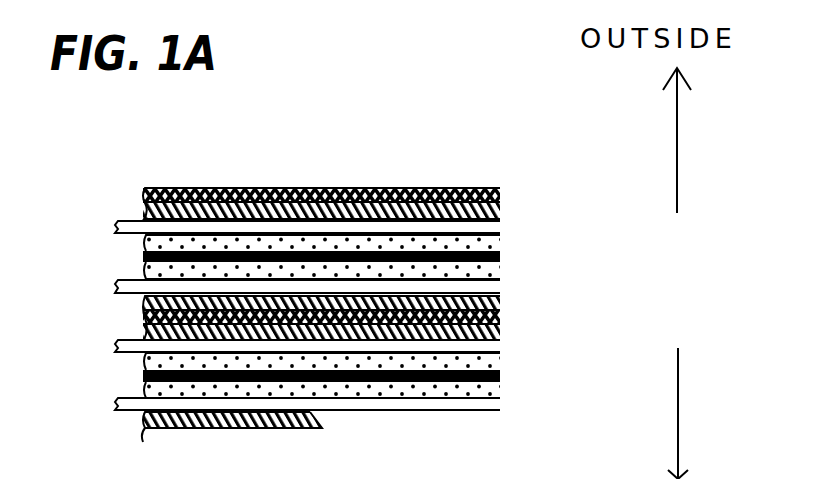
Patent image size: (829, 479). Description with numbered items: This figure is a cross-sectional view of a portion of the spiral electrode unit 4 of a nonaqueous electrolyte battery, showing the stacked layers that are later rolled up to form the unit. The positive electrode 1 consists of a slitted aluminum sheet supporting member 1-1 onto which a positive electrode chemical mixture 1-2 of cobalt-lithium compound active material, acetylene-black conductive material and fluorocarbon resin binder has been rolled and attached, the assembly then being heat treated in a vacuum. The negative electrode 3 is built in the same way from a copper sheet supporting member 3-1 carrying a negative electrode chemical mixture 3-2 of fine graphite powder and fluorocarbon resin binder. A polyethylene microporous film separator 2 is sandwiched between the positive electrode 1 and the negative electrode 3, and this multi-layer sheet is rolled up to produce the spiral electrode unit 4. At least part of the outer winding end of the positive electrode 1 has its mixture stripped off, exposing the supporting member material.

The positive electrode 1 is at (128, 317).
The aluminum sheet supporting member 1-1 is at (462, 190).
The positive electrode chemical mixture 1-2 is at (497, 330).
The polyethylene microporous film separator 2 is at (130, 222).
The negative electrode 3 is at (130, 257).
The copper sheet supporting member 3-1 is at (482, 263).
The negative electrode chemical mixture 3-2 is at (488, 242).
The spiral electrode unit 4 is at (293, 180).